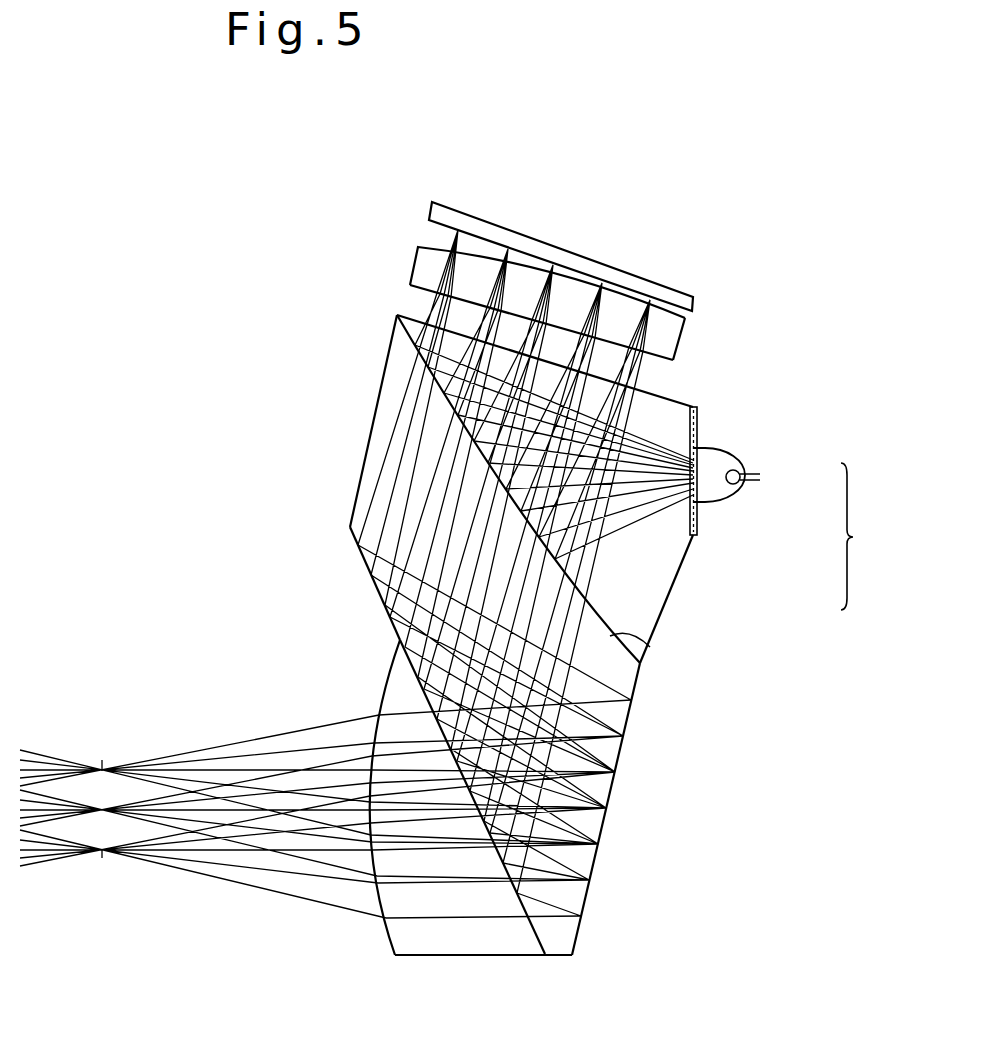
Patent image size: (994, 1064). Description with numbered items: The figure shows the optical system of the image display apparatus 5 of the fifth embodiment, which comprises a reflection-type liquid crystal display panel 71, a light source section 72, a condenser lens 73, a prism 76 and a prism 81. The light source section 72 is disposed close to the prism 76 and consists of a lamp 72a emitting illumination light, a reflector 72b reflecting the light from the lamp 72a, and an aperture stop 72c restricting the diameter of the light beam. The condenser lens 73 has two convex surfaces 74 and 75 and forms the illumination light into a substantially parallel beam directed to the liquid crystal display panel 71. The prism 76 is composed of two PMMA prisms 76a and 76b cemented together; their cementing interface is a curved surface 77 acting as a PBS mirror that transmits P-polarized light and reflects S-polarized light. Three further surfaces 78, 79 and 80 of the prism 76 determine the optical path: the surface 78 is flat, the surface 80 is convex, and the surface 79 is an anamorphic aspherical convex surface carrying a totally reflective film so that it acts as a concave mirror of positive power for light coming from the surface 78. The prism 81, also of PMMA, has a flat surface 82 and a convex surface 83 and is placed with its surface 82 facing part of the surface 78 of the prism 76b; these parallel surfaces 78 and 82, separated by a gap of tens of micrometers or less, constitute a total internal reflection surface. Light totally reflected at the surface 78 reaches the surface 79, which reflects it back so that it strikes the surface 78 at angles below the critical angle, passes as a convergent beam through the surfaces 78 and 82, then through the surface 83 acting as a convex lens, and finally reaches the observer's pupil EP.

The image display apparatus 5 is at (356, 1050).
The reflection-type liquid crystal display panel 71 is at (583, 255).
The light source section 72 is at (868, 536).
The lamp 72a is at (728, 492).
The reflector 72b is at (715, 500).
The aperture stop 72c is at (696, 540).
The condenser lens 73 is at (417, 263).
The convex surface 74 is at (688, 322).
The convex surface 75 is at (675, 358).
The prism 76 is at (355, 348).
The prism 76a is at (652, 611).
The prism 76b is at (368, 438).
The cementing interface surface 77 is at (650, 650).
The flat surface 78 is at (383, 615).
The anamorphic aspherical convex surface 79 is at (609, 795).
The convex surface 80 is at (670, 396).
The prism 81 is at (481, 976).
The flat surface 82 is at (532, 935).
The convex surface 83 is at (383, 927).
The pupil EP is at (102, 862).